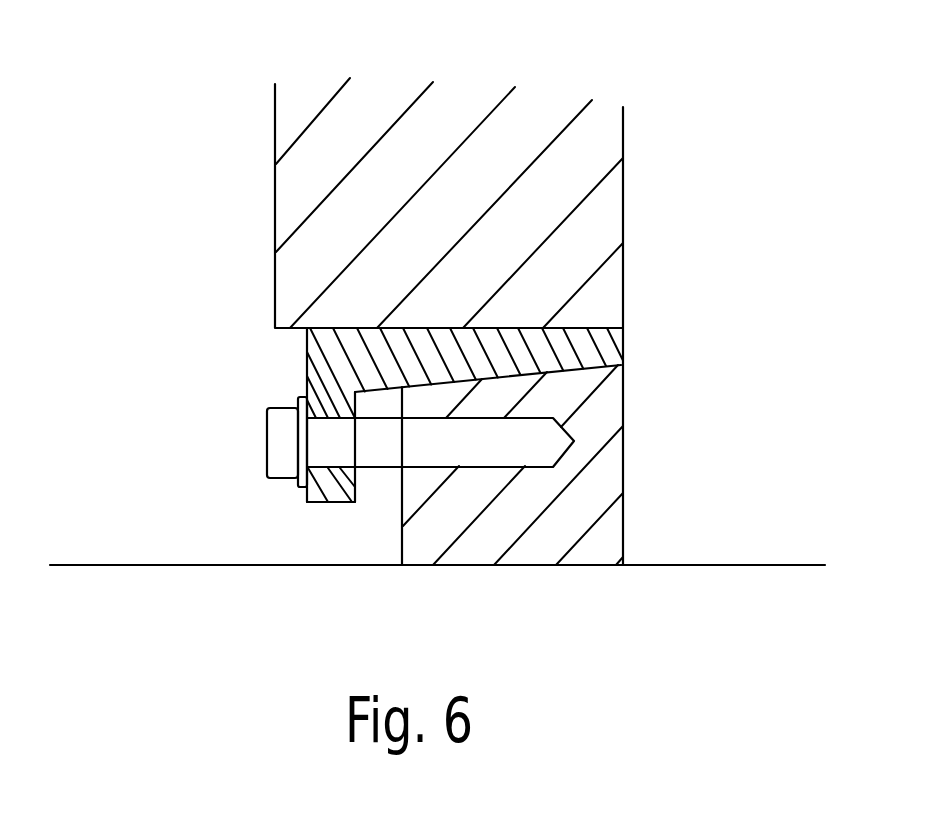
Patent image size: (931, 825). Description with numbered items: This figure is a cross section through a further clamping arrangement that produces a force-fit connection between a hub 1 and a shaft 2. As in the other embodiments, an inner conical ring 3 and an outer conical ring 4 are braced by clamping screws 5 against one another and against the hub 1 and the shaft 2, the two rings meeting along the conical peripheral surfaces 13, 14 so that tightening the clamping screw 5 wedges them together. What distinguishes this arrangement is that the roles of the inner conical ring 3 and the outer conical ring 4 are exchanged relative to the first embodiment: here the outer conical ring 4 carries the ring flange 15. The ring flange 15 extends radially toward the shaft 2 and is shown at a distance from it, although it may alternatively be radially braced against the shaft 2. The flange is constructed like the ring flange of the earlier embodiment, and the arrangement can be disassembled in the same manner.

The hub 1 is at (533, 116).
The shaft 2 is at (687, 588).
The inner conical ring 3 is at (612, 467).
The outer conical ring 4 is at (612, 342).
The clamping screw 5 is at (327, 443).
The conical peripheral surface 13 is at (567, 373).
The conical peripheral surface 14 is at (613, 361).
The ring flange 15 is at (338, 500).